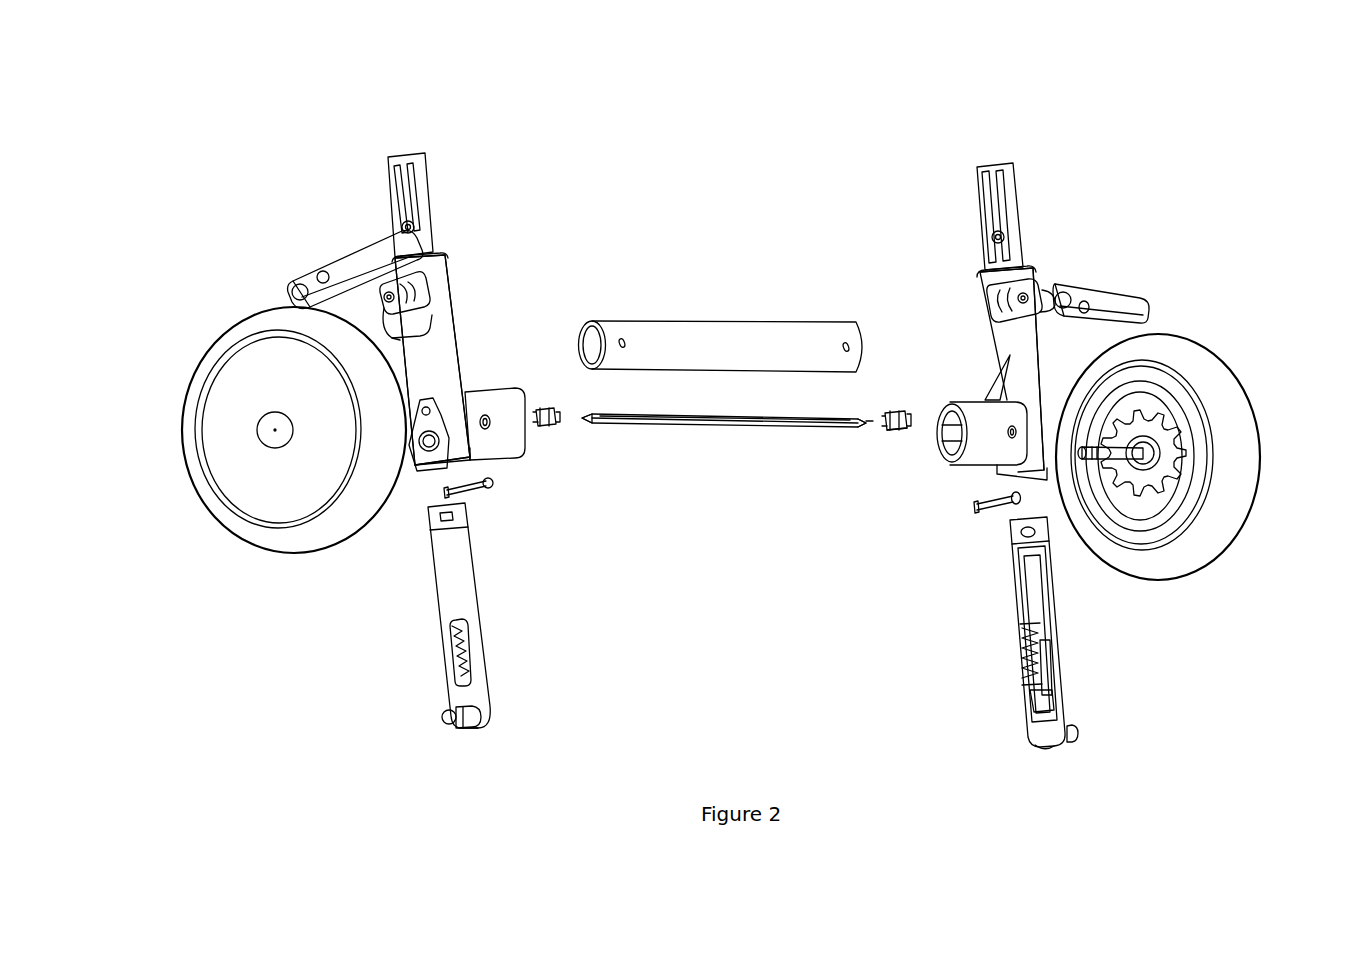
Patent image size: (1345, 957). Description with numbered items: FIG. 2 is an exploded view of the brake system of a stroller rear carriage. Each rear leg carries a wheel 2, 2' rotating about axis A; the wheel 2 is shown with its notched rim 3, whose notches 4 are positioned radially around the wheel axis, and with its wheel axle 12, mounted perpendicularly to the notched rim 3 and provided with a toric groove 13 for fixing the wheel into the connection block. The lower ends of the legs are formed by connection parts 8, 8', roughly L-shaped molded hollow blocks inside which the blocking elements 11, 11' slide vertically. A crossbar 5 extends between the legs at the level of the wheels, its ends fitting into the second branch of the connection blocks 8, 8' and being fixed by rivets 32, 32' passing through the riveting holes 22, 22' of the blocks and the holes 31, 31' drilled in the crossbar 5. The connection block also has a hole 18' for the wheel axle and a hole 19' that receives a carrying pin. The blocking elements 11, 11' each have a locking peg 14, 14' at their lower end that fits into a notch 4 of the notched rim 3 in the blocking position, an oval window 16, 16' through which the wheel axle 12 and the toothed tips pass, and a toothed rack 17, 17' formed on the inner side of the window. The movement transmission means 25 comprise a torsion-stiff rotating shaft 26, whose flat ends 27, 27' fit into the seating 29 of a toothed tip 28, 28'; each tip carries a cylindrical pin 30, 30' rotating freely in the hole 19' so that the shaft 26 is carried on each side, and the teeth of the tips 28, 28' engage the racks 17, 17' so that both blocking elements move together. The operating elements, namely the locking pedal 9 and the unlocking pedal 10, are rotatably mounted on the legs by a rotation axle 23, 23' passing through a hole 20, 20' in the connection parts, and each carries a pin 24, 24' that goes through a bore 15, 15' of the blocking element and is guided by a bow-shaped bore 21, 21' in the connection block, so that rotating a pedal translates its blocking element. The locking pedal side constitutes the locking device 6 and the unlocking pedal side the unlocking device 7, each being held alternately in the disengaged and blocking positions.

The wheel 2 is at (1186, 415).
The wheel 2' is at (261, 408).
The notched rim 3 is at (1178, 415).
The notch 4 is at (1140, 490).
The crossbar 5 is at (713, 320).
The locking device 6 is at (995, 147).
The unlocking device 7 is at (399, 137).
The connection part 8 is at (927, 347).
The connection part 8' is at (470, 308).
The first operating element 9 is at (1148, 293).
The second operating element 10 is at (378, 236).
The first blocking element 11 is at (1060, 794).
The second blocking element 11' is at (538, 691).
The axle 12 is at (1122, 486).
The toric groove 13 is at (1130, 420).
The locking peg 14 is at (1132, 742).
The locking peg 14' is at (420, 751).
The bore 15 is at (1110, 632).
The bore 15' is at (427, 615).
The window 16 is at (1099, 662).
The window 16' is at (518, 633).
The toothed rack 17 is at (991, 699).
The toothed rack 17' is at (498, 612).
The hole 18' is at (365, 519).
The hole 19' is at (470, 398).
The hole 20 is at (1032, 206).
The hole 20' is at (497, 299).
The bow-shaped bore 21 is at (975, 247).
The bow-shaped bore 21' is at (492, 273).
The riveting hole 22 is at (983, 477).
The riveting hole 22' is at (530, 463).
The rotation axle 23 is at (1101, 244).
The rotation axle 23' is at (269, 256).
The pin 24 is at (1101, 246).
The pin 24' is at (355, 239).
The movement transmission means 25 is at (764, 466).
The rotating shaft 26 is at (702, 428).
The end of the shaft 27 is at (837, 482).
The end of the shaft 27' is at (646, 519).
The toothed tip 28 is at (883, 492).
The toothed tip 28' is at (595, 473).
The seating 29 is at (883, 412).
The pin 30 is at (913, 531).
The pin 30' is at (550, 364).
The hole 31 is at (819, 302).
The hole 31' is at (633, 290).
The rivet 32 is at (991, 543).
The rivet 32' is at (520, 521).